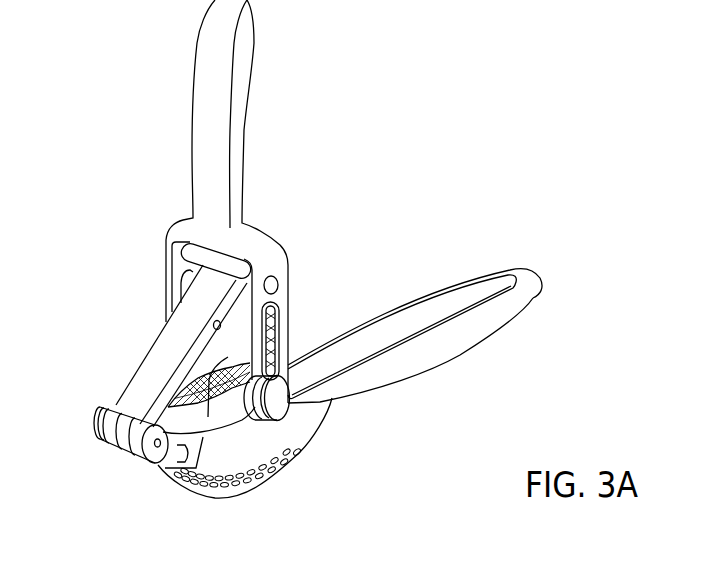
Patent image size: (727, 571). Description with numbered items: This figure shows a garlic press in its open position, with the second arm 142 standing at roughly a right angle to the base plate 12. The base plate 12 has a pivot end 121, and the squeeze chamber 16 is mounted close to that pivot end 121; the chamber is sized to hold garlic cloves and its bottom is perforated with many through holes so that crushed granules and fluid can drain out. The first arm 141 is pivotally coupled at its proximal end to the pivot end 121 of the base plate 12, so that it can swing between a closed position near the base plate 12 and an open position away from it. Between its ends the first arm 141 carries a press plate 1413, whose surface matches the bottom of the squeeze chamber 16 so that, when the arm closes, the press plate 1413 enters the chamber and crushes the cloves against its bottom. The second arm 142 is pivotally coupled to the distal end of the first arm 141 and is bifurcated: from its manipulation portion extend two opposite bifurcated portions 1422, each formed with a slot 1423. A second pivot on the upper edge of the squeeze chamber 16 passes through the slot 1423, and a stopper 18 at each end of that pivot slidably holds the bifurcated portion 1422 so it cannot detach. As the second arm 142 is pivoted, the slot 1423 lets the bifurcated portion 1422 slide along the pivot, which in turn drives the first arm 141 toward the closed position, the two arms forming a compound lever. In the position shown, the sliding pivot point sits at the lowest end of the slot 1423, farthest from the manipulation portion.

The base plate 12 is at (410, 360).
The squeeze chamber 16 is at (207, 493).
The stopper 18 is at (272, 400).
The pivot end 121 is at (185, 448).
The first arm 141 is at (162, 362).
The second arm 142 is at (213, 112).
The press plate 1413 is at (209, 407).
The bifurcated portion 1422 is at (280, 293).
The slot 1423 is at (270, 314).